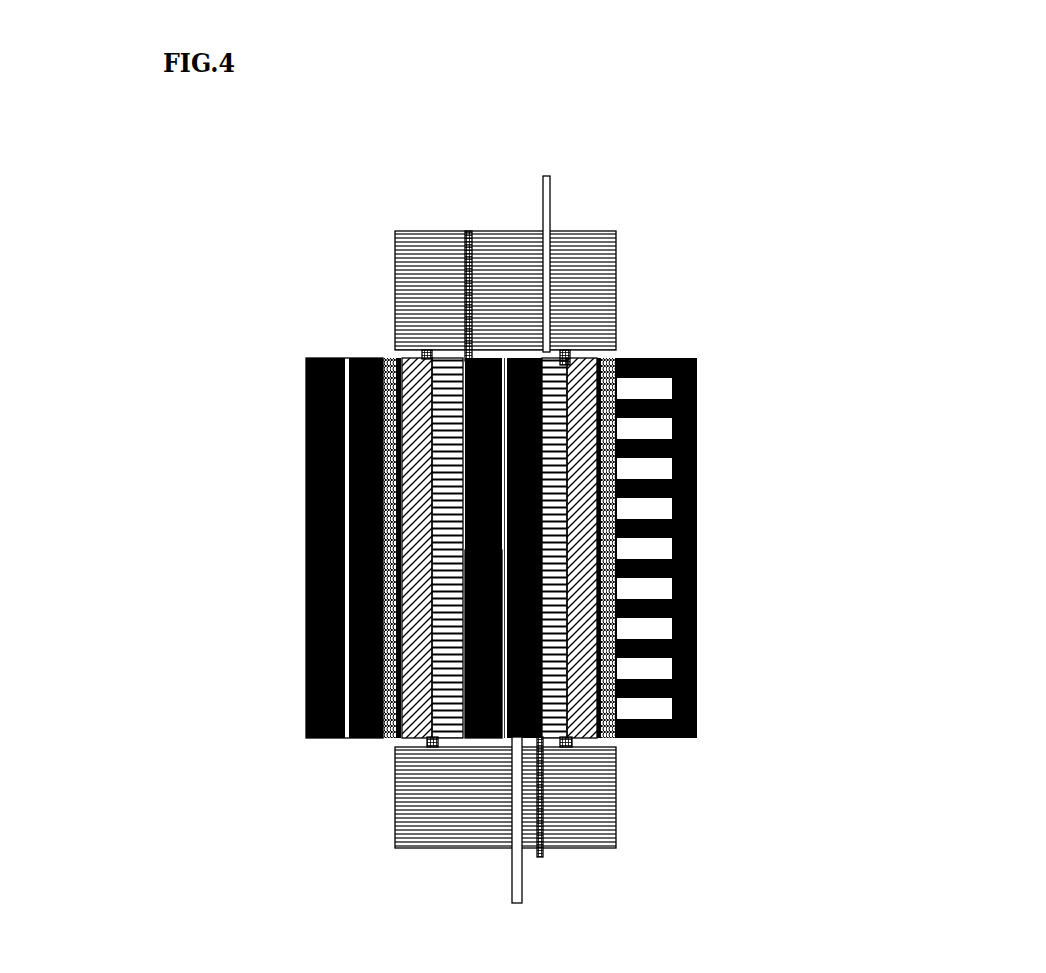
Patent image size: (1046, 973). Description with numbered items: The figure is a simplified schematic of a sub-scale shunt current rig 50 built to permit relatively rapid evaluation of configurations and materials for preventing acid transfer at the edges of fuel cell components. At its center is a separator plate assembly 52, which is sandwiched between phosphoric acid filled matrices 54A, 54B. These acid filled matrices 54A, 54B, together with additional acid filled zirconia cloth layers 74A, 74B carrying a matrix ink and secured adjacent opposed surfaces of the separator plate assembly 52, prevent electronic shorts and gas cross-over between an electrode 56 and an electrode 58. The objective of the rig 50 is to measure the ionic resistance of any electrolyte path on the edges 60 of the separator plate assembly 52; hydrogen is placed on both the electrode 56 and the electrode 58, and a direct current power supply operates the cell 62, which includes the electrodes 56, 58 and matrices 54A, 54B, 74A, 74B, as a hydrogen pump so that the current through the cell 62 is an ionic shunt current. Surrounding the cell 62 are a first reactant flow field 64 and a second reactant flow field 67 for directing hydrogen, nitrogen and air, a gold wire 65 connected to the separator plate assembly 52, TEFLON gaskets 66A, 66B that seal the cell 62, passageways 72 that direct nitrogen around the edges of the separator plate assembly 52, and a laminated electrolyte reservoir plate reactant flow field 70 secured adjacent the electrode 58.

The sub-scale shunt current rig 50 is at (432, 524).
The separator plate assembly 52 is at (503, 370).
The phosphoric acid filled matrix 54A is at (306, 654).
The phosphoric acid filled matrix 54B is at (600, 738).
The electrode 56 is at (705, 525).
The electrode 58 is at (397, 357).
The edges 60 is at (487, 737).
The cell 62 is at (252, 787).
The first reactant flow field 64 is at (325, 355).
The gold wire 65 is at (467, 231).
The TEFLON gasket 66A is at (618, 203).
The TEFLON gasket 66B is at (425, 848).
The second reactant flow field 67 is at (660, 469).
The laminated electrolyte reservoir plate reactant flow field 70 is at (306, 528).
The passageways 72 is at (470, 925).
The zirconia cloth layer 74A is at (447, 712).
The zirconia cloth layer 74B is at (550, 370).